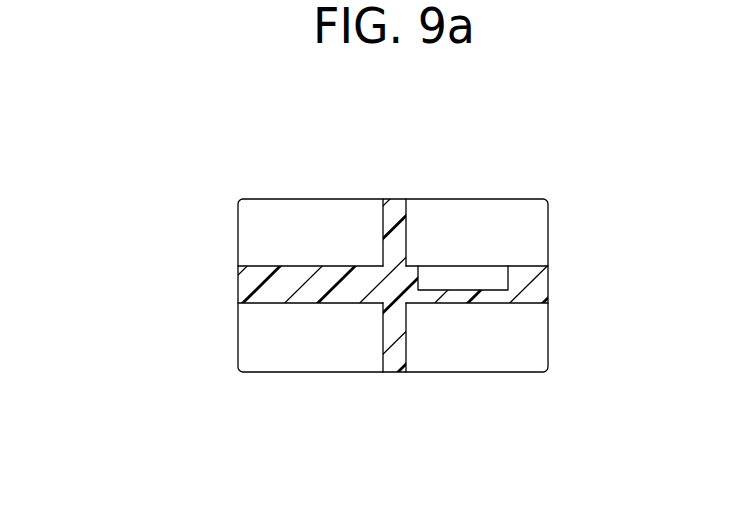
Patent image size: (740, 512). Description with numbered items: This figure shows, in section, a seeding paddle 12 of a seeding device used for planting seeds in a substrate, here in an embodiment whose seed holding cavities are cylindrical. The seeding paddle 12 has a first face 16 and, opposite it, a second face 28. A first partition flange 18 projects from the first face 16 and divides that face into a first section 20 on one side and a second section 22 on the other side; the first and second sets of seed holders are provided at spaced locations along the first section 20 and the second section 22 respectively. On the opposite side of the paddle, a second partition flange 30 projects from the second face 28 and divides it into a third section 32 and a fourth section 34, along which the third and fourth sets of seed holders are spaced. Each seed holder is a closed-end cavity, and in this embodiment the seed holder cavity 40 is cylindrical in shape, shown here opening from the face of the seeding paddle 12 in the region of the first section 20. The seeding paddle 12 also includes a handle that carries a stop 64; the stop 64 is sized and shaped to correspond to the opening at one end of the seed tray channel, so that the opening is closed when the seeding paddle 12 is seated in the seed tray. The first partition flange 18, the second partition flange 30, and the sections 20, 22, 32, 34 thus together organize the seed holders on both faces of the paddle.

The seeding paddle 12 is at (176, 218).
The first face 16 is at (330, 265).
The first partition flange 18 is at (382, 222).
The first section 20 is at (531, 266).
The second section 22 is at (272, 265).
The second face 28 is at (340, 303).
The second partition flange 30 is at (406, 340).
The third section 32 is at (512, 303).
The fourth section 34 is at (312, 303).
The seed holder cavity 40 is at (463, 290).
The stop 64 is at (533, 333).